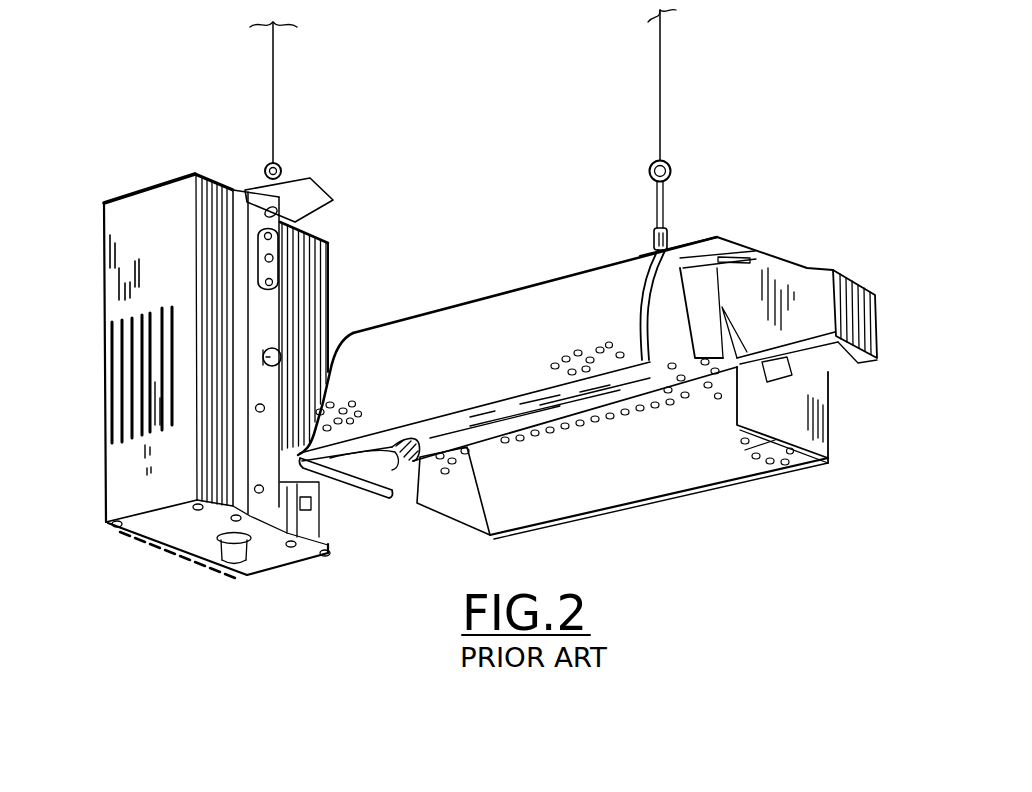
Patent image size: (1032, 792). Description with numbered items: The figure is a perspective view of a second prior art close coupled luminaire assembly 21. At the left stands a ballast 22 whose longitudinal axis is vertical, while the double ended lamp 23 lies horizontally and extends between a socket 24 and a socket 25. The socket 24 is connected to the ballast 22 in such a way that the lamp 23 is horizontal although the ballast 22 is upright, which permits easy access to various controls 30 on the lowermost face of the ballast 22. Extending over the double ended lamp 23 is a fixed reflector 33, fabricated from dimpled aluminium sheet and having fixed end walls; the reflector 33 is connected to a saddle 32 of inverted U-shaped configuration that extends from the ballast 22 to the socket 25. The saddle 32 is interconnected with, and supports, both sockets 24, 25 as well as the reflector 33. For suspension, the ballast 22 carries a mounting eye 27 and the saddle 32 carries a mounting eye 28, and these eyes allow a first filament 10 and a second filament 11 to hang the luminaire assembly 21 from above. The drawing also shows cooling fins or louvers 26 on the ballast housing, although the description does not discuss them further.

The first filament 10 is at (273, 90).
The second filament 11 is at (658, 57).
The close coupled luminaire assembly 21 is at (597, 309).
The ballast 22 is at (150, 208).
The double ended lamp 23 is at (537, 415).
The socket 24 is at (357, 493).
The socket 25 is at (858, 362).
The cooling fins / louvers 26 is at (213, 230).
The mounting eye 27 is at (263, 165).
The mounting eye 28 is at (672, 172).
The controls 30 is at (225, 571).
The saddle 32 is at (668, 248).
The fixed reflector 33 is at (502, 305).